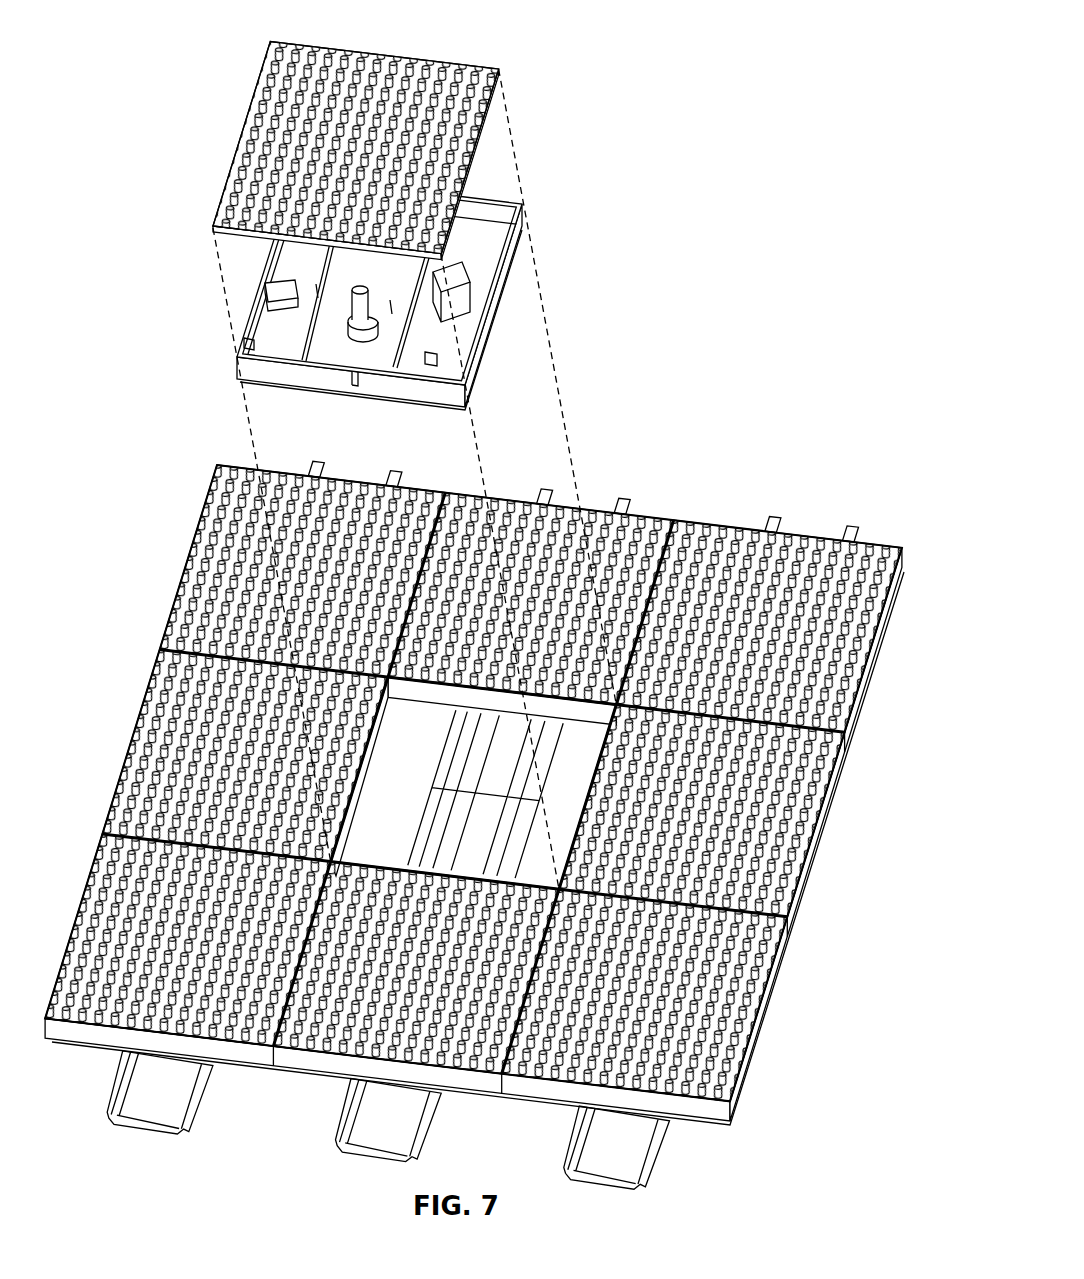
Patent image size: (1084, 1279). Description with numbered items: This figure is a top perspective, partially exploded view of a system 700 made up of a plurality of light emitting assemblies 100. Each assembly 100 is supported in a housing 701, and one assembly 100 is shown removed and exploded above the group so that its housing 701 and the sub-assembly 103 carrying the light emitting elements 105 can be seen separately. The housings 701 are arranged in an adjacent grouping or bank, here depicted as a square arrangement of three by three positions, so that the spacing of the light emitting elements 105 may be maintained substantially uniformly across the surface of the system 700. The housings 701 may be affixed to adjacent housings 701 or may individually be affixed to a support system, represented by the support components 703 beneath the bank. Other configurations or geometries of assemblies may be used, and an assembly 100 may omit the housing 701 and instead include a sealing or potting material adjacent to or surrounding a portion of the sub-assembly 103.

The light emitting assembly 100 is at (478, 617).
The sub-assembly 103 is at (485, 110).
The light emitting elements 105 is at (489, 70).
The system 700 is at (474, 808).
The housing 701 is at (870, 708).
The support components 703 is at (625, 1147).